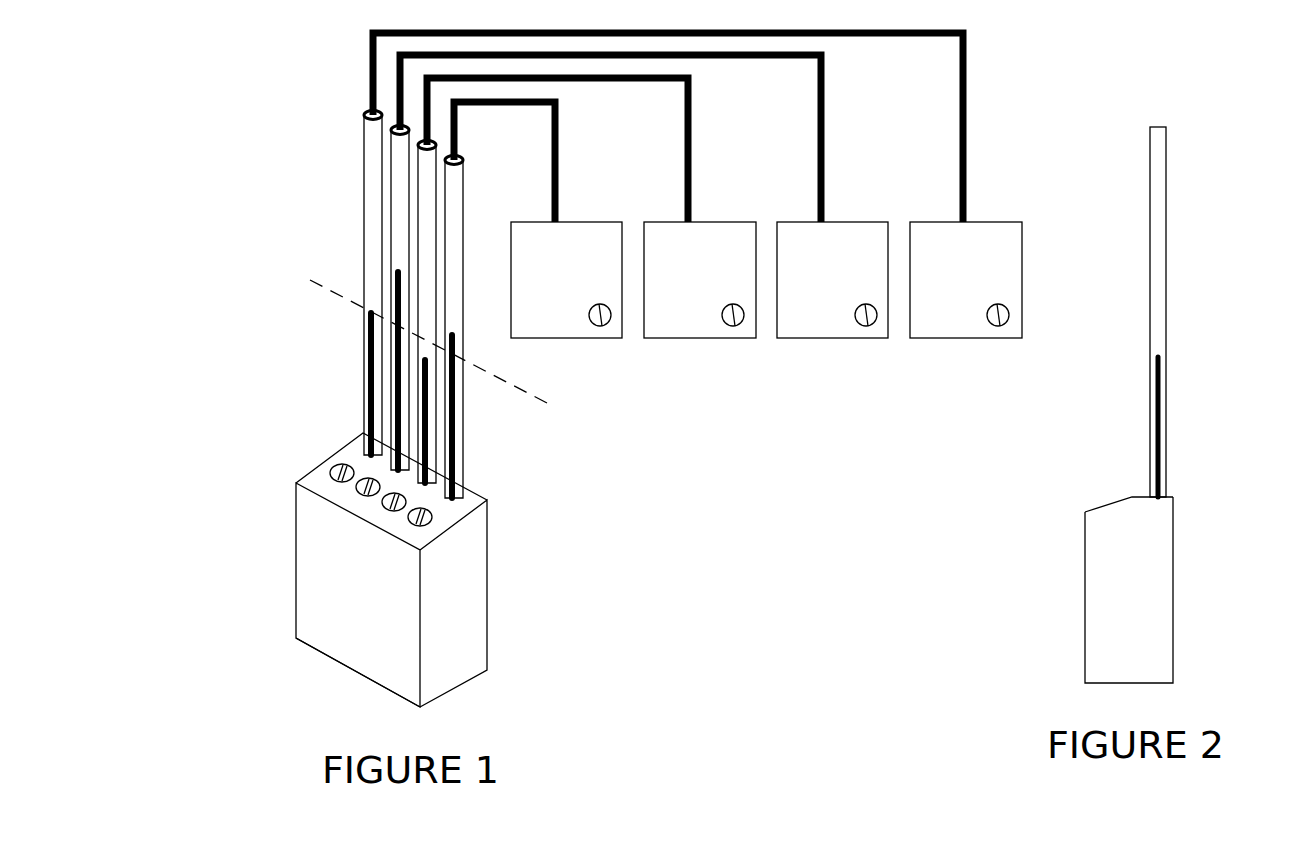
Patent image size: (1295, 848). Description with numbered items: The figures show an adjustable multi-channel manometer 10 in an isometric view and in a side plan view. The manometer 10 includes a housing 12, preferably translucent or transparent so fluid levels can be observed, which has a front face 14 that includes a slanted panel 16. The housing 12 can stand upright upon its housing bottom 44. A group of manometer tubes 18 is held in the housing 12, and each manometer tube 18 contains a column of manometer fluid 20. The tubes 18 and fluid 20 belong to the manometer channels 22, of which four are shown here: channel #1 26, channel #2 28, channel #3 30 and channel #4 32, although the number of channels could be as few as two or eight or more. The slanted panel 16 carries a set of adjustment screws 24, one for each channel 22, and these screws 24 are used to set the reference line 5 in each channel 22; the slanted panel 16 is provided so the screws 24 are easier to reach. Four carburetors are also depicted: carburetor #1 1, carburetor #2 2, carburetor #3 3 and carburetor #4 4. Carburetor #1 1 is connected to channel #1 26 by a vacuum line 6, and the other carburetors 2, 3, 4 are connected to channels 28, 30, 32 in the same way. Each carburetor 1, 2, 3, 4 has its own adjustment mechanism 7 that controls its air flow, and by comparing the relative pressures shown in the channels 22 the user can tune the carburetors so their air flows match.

In FIG. 1, the carburetor # 1 is at (932, 338).
In FIG. 1, the carburetor # 2 is at (822, 338).
In FIG. 1, the carburetor # 3 is at (688, 338).
In FIG. 1, the carburetor # 4 is at (555, 338).
In FIG. 1, the reference line 5 is at (485, 372).
In FIG. 1, the vacuum line 6 is at (687, 127).
In FIG. 1, the adjustment mechanism 7 is at (600, 326).
In FIG. 1, the multi-channel manometer 10 is at (262, 445).
In FIG. 2, the multi-channel manometer 10 is at (1212, 158).
In FIG. 1, the housing 12 is at (260, 528).
In FIG. 2, the housing 12 is at (1072, 623).
In FIG. 1, the front face 14 is at (312, 583).
In FIG. 1, the slanted panel 16 is at (305, 477).
In FIG. 2, the slanted panel 16 is at (1120, 497).
In FIG. 1, the manometer tube 18 is at (362, 415).
In FIG. 2, the manometer tube 18 is at (1167, 315).
In FIG. 1, the manometer fluid 20 is at (457, 468).
In FIG. 2, the manometer fluid 20 is at (1150, 430).
In FIG. 1, the manometer channel 22 is at (343, 87).
In FIG. 2, the manometer channel 22 is at (1128, 229).
In FIG. 1, the adjustment screw 24 is at (410, 520).
In FIG. 1, the channel #1 26 is at (366, 117).
In FIG. 1, the channel #2 28 is at (392, 155).
In FIG. 1, the channel #3 30 is at (422, 190).
In FIG. 1, the channel #4 32 is at (462, 233).
In FIG. 1, the housing bottom 44 is at (350, 668).